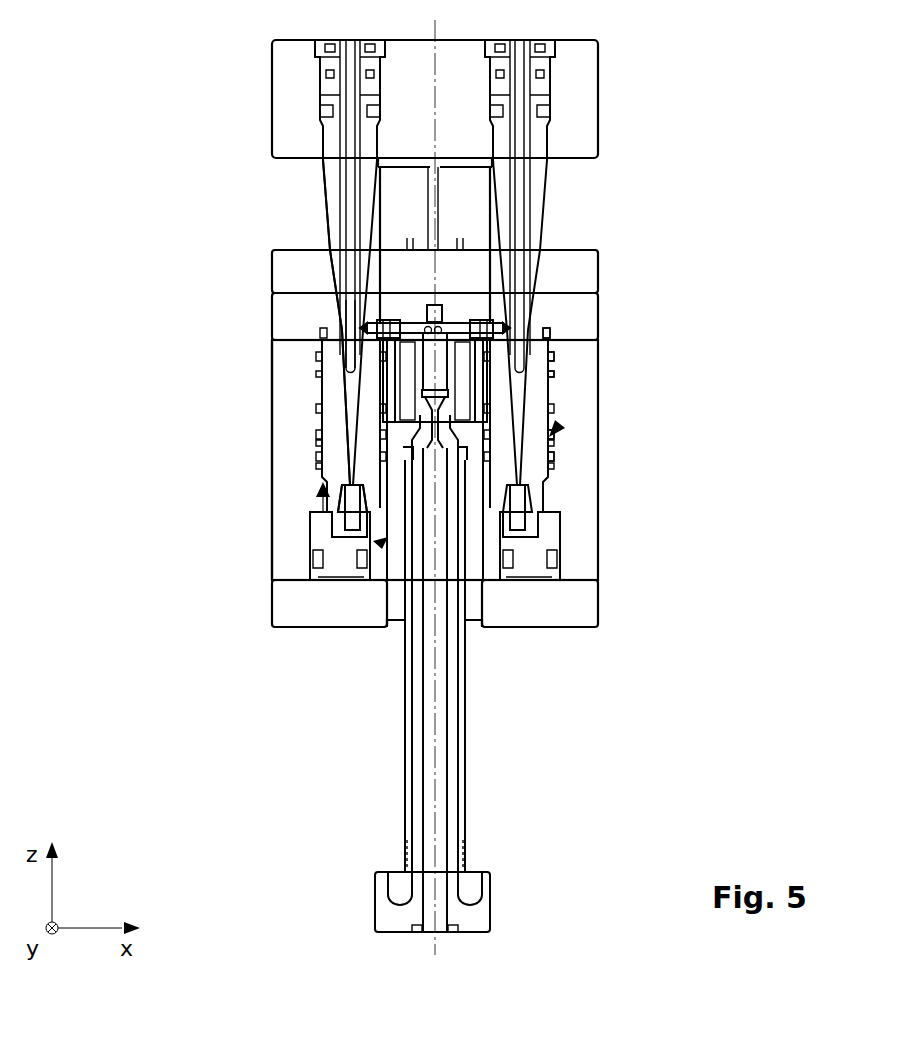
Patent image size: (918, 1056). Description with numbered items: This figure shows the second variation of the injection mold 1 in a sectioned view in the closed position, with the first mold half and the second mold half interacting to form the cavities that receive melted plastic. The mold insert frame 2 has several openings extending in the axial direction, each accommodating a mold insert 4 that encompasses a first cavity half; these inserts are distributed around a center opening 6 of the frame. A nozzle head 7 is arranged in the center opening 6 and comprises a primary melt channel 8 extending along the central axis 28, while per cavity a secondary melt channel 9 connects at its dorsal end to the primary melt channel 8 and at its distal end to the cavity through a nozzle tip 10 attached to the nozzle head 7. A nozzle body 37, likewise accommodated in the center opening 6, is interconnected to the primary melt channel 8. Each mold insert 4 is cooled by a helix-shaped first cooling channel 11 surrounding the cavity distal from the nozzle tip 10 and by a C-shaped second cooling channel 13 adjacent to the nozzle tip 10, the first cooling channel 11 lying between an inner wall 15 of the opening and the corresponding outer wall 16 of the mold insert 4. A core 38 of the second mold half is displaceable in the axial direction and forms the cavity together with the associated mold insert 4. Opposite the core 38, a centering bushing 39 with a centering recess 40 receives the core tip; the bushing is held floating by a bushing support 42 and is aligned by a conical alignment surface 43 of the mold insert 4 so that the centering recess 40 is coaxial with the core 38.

The injection mold 1 is at (123, 69).
The mold insert frame 2 is at (287, 427).
The mold insert 4 is at (335, 387).
The center opening 6 is at (378, 544).
The nozzle head 7 is at (460, 320).
The primary melt channel 8 is at (438, 367).
The secondary melt channel 9 is at (506, 318).
The nozzle tip 10 is at (548, 325).
The first cooling channel 11 is at (548, 462).
The second cooling channel 13 is at (548, 370).
The inner wall 15 is at (560, 424).
The outer wall 16 is at (549, 440).
The central axis 28 is at (434, 699).
The nozzle body 37 is at (418, 652).
The core 38 is at (348, 406).
The centering bushing 39 is at (342, 530).
The centering recess 40 is at (350, 503).
The bushing support 42 is at (333, 520).
The alignment surface 43 is at (320, 492).